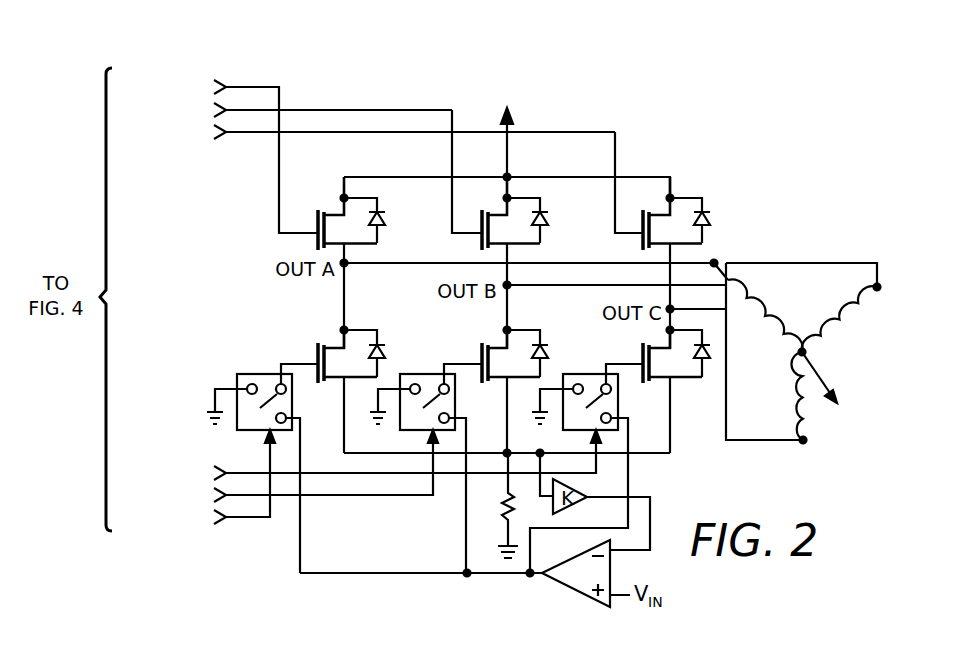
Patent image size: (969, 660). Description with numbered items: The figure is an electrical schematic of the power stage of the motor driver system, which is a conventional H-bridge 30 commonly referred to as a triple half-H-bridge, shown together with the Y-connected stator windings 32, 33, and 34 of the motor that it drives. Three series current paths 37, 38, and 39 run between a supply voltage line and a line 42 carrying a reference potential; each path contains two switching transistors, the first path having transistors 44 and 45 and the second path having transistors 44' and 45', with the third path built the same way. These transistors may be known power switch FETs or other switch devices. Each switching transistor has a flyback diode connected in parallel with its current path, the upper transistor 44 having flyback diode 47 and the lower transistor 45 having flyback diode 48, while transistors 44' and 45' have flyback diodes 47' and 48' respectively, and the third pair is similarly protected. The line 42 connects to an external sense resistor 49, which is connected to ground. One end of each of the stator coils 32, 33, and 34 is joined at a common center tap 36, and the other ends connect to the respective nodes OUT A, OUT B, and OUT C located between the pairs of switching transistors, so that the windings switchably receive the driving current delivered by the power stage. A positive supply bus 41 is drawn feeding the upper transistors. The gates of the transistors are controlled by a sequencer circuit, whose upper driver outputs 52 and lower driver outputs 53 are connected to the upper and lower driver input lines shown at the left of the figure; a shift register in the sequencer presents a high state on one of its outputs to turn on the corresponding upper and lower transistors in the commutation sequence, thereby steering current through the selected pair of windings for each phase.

The H-bridge 30 is at (777, 96).
The stator winding 32 is at (776, 302).
The stator winding 33 is at (840, 312).
The stator winding 34 is at (788, 402).
The common center tap 36 is at (799, 351).
The series current path 37 is at (421, 102).
The series current path 38 is at (582, 126).
The series current path 39 is at (685, 177).
The supply voltage bus 41 is at (580, 178).
The line 42 is at (474, 451).
The switching transistor 44 is at (309, 262).
The switching transistor 44' is at (481, 262).
The switching transistor 45 is at (292, 451).
The switching transistor 45' is at (455, 451).
The flyback diode 47 is at (380, 194).
The flyback diode 47' is at (543, 194).
The flyback diode 48 is at (376, 335).
The flyback diode 48' is at (543, 335).
The external sense resistor 49 is at (506, 510).
The upper driver outputs 52 is at (248, 78).
The lower driver outputs 53 is at (242, 524).